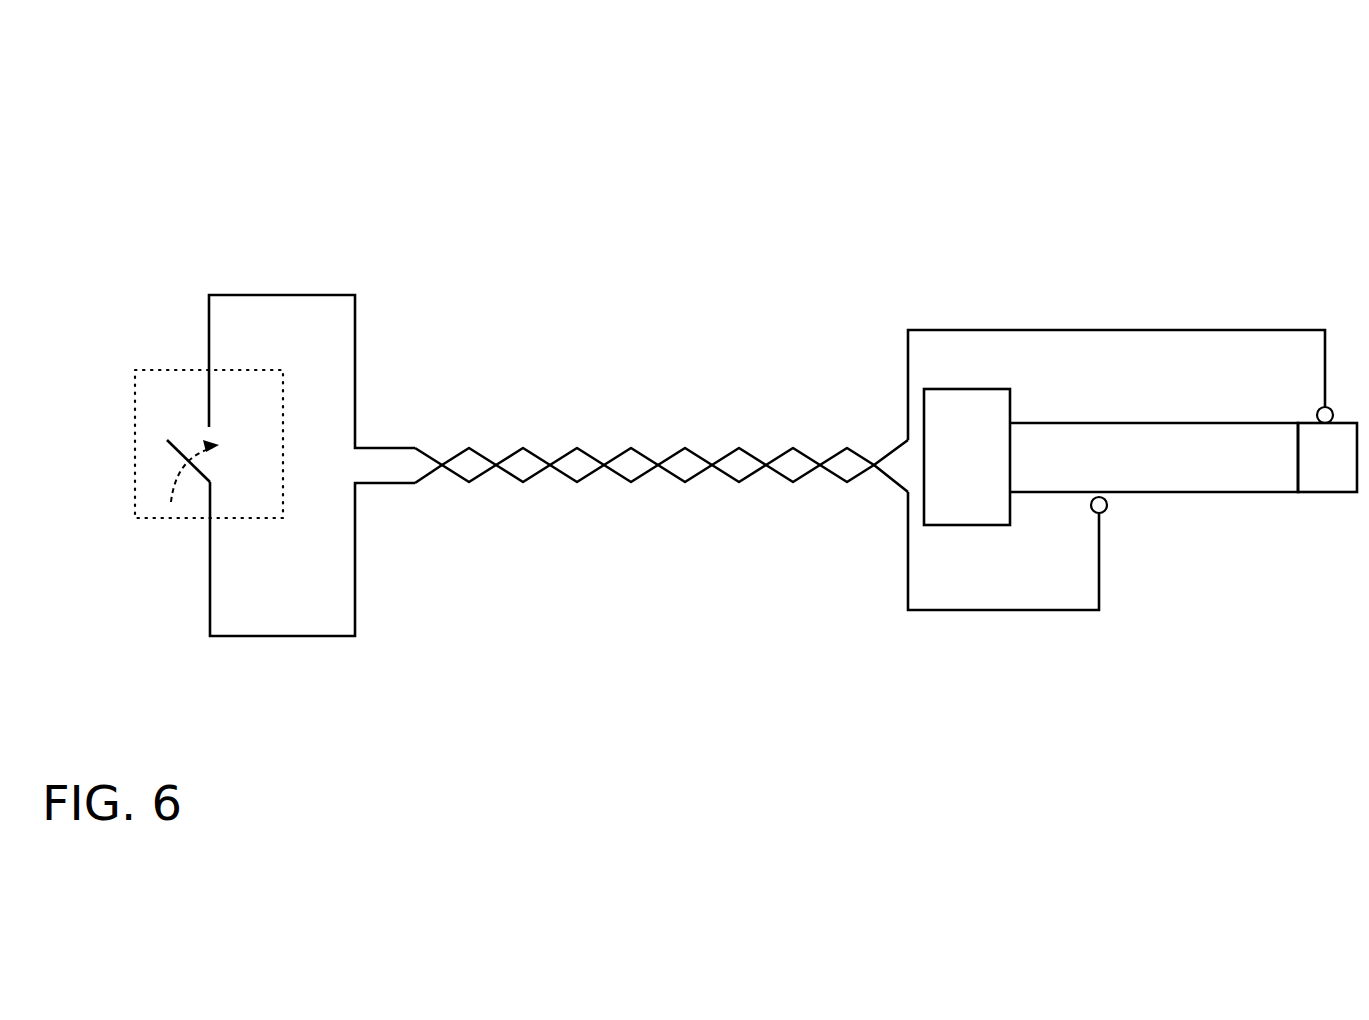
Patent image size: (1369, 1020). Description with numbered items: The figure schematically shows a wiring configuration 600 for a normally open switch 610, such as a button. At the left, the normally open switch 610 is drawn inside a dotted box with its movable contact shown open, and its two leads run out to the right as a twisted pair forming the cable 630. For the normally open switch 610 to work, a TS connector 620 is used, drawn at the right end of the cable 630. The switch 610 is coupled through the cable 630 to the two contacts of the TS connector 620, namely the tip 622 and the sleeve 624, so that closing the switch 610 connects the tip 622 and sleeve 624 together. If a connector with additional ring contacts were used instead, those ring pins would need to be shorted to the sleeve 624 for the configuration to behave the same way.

The wiring configuration 600 is at (554, 88).
The normally open switch 610 is at (266, 251).
The TS connector 620 is at (1109, 383).
The tip 622 is at (1327, 457).
The sleeve 624 is at (1154, 457).
The cable 630 is at (622, 398).